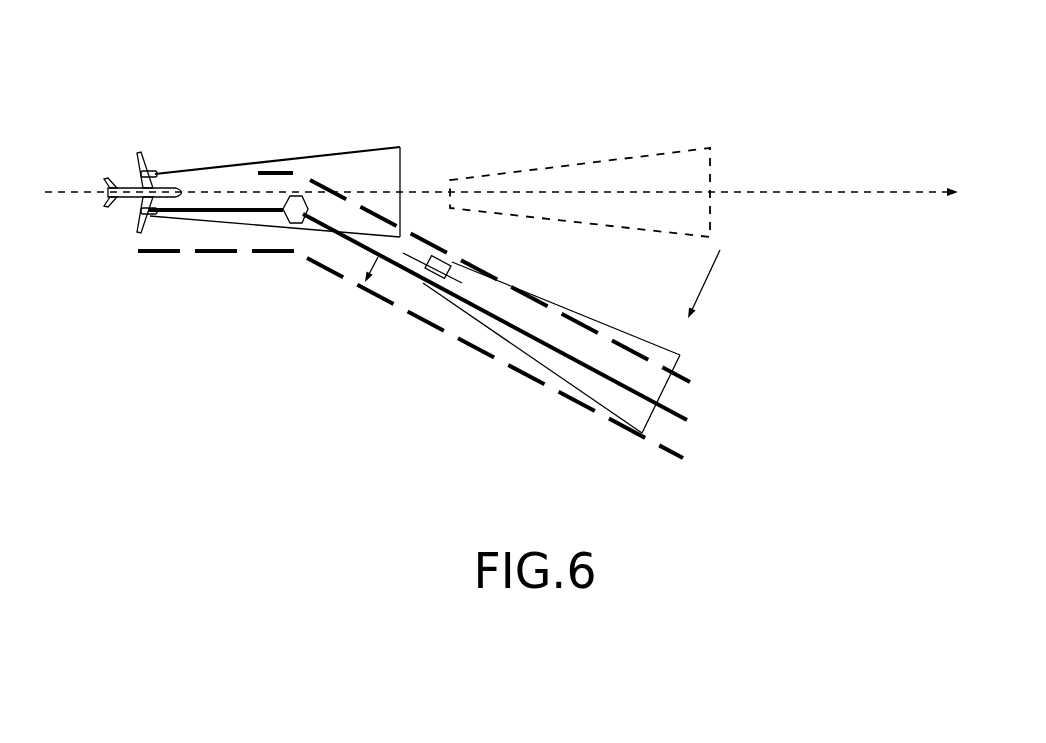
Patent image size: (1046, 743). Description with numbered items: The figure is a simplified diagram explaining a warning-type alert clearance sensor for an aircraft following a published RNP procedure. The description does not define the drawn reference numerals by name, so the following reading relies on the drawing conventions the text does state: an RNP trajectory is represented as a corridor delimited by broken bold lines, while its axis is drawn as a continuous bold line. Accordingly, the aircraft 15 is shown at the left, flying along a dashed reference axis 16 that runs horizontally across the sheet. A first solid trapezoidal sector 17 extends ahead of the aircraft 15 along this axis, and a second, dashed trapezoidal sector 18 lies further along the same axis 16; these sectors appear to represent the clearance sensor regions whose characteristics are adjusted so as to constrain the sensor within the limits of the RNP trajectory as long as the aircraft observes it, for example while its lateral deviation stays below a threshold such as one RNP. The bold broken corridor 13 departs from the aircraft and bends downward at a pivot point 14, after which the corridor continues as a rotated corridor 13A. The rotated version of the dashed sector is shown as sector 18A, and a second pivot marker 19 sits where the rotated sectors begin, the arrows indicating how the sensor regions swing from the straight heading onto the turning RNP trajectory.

The flight path trajectory 13 is at (409, 368).
The rotated flight path trajectory 13A is at (690, 415).
The pivot waypoint 14 is at (299, 187).
The aircraft 15 is at (108, 172).
The reference direction axis 16 is at (855, 191).
The first zone 17 is at (383, 165).
The second zone 18 is at (630, 170).
The rotated second zone 18A is at (640, 374).
The rotated pivot waypoint 19 is at (455, 259).